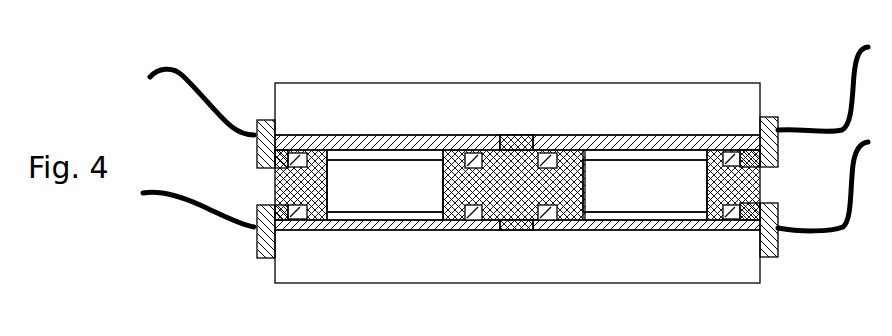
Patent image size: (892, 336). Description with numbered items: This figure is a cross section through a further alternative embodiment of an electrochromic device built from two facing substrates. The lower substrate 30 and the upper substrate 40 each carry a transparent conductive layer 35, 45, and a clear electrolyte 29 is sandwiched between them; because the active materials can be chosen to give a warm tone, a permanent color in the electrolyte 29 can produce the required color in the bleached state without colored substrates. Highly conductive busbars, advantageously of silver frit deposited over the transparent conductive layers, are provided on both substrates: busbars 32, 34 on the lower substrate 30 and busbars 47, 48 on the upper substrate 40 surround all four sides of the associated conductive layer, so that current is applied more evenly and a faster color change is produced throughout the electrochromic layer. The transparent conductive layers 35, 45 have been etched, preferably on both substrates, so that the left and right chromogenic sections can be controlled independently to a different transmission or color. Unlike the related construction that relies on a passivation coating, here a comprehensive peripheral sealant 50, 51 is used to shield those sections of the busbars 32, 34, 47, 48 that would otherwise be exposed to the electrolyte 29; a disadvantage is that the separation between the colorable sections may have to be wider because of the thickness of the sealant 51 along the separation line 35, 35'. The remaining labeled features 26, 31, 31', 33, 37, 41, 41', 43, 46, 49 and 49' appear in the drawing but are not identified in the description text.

The lower right frame block 26 is at (779, 240).
The electrolyte 29 is at (517, 185).
The lower substrate 30 is at (276, 271).
The lower conductor layer 31 is at (364, 276).
The lower conductor layer 31' is at (645, 277).
The busbar 32 is at (475, 222).
The lower left frame block 33 is at (256, 249).
The busbar 34 is at (563, 222).
The transparent conductive layer 35 is at (387, 264).
The separation line 35' is at (646, 271).
The lower lead wire 37 is at (178, 190).
The upper substrate 40 is at (273, 83).
The upper lead wire 41 is at (197, 78).
The upper lead wire 41' is at (823, 89).
The upper left frame block 43 is at (257, 118).
The transparent conductive layer 45 is at (350, 145).
The upper right frame block 46 is at (688, 140).
The busbar 47 is at (472, 150).
The busbar 48 is at (548, 150).
The chip attach layer 49 is at (385, 125).
The chip attach layer 49' is at (645, 126).
The peripheral sealant 50 is at (274, 188).
The peripheral sealant 51 is at (506, 135).